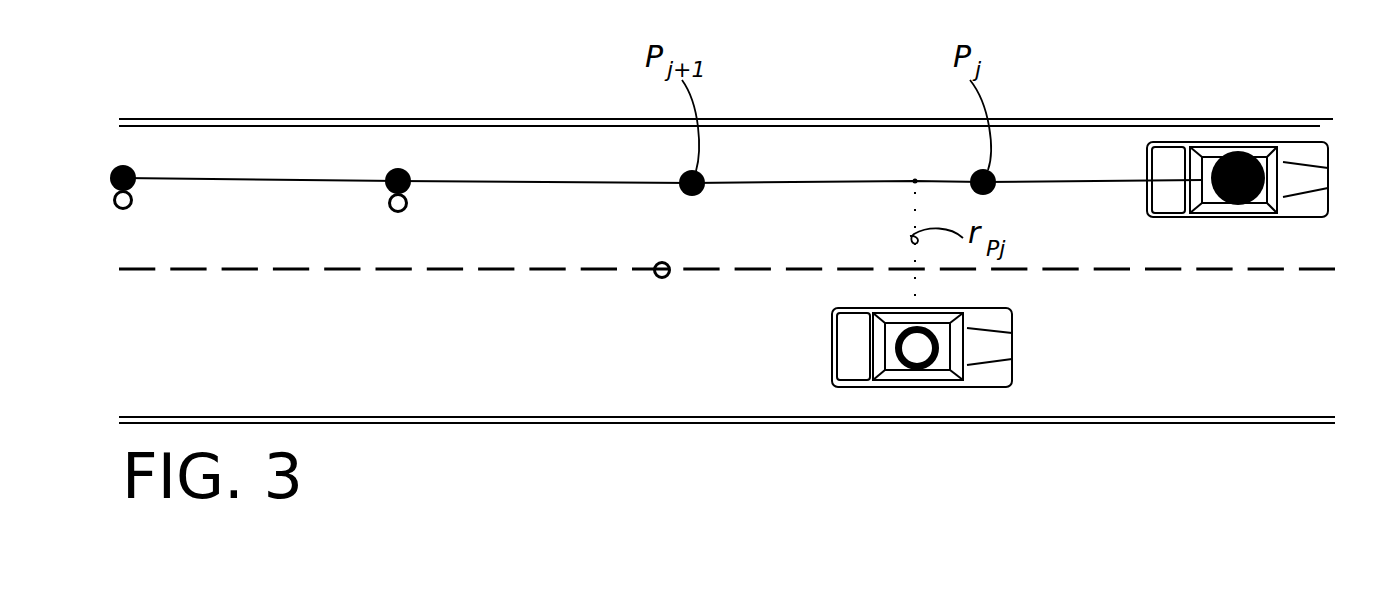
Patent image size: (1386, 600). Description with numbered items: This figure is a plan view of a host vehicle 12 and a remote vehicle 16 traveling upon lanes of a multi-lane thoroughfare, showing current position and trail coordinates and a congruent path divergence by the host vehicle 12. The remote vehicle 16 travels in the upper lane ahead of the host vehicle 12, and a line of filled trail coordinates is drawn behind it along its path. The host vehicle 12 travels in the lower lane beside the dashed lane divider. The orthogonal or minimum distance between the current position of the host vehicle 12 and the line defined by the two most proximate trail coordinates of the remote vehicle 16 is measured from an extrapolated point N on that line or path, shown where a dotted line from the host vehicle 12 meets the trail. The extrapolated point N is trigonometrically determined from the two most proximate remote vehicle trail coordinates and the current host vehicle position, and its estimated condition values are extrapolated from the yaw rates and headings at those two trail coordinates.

The remote vehicle 16 is at (1313, 140).
The host vehicle 12 is at (951, 387).
The host vehicle position H is at (917, 345).
The extrapolated point N is at (917, 178).